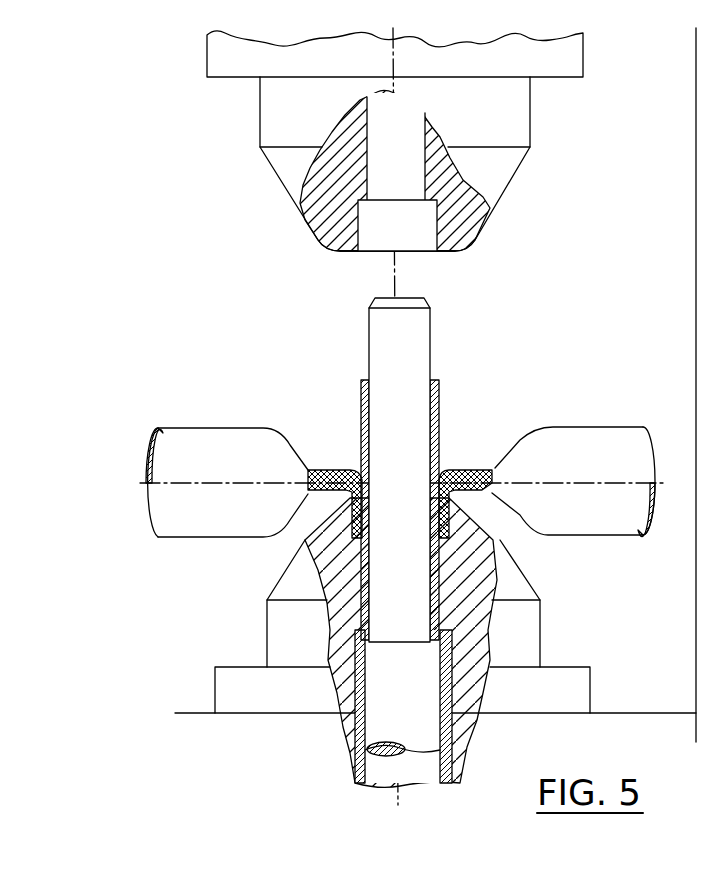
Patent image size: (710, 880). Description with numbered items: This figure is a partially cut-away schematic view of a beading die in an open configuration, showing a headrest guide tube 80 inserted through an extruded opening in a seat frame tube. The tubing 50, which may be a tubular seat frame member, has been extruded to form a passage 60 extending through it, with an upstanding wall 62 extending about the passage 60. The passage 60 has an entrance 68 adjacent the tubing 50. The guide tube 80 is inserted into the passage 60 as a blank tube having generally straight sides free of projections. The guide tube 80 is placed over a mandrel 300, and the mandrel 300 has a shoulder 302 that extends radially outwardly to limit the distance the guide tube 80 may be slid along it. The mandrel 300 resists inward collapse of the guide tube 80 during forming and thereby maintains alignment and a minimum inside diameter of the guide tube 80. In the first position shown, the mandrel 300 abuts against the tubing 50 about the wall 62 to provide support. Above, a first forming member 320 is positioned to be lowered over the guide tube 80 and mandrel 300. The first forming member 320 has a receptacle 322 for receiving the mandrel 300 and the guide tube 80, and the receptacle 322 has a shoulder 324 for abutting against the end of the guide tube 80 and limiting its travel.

The tubing 50 is at (228, 437).
The passage 60 is at (388, 496).
The upstanding wall 62 is at (460, 502).
The entrance 68 is at (352, 461).
The headrest guide tube 80 is at (437, 412).
The mandrel 300 is at (417, 345).
The shoulder 302 is at (462, 628).
The first forming member 320 is at (497, 167).
The receptacle 322 is at (374, 240).
The shoulder 324 is at (424, 212).